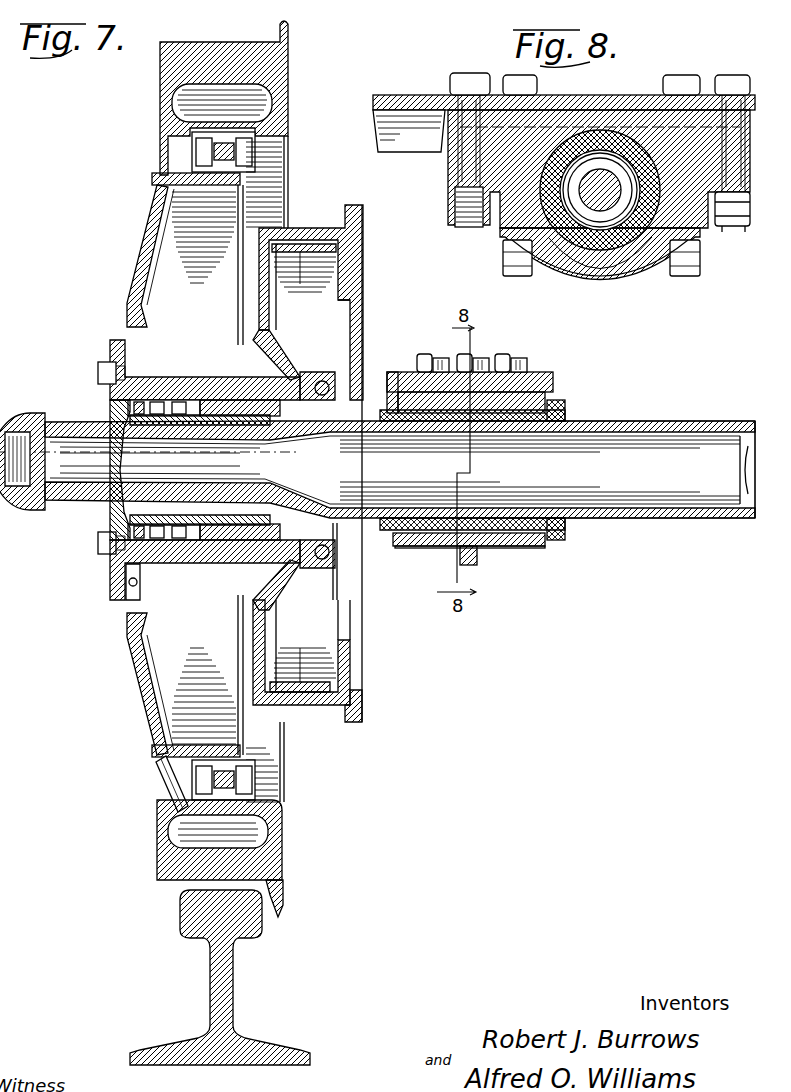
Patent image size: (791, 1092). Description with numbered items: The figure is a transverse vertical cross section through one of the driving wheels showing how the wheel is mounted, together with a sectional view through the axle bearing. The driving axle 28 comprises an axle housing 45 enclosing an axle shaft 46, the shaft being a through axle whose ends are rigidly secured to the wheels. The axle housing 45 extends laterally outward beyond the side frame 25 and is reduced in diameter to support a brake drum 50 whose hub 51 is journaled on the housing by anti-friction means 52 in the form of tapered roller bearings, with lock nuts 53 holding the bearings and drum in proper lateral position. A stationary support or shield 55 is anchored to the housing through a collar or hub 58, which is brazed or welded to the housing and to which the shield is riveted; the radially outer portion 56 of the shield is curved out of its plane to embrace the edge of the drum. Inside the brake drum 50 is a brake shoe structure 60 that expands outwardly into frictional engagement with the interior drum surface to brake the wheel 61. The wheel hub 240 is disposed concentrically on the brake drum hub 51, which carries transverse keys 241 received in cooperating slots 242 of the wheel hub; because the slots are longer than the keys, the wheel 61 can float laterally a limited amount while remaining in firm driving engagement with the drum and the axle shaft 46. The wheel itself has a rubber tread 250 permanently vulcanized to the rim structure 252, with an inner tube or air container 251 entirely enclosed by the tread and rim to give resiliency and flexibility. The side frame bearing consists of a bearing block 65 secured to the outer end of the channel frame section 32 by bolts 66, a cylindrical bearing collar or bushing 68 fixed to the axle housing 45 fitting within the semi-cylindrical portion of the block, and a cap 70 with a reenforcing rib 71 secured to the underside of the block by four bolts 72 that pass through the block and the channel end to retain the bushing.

In FIG. 7, the side frame 25 is at (548, 372).
In FIG. 7, the driving axle 28 is at (700, 518).
In FIG. 7, the frame section 32 is at (390, 370).
In FIG. 8, the frame section 32 is at (384, 86).
In FIG. 7, the axle housing 45 is at (632, 421).
In FIG. 8, the axle housing 45 is at (612, 210).
In FIG. 7, the axle shaft 46 is at (655, 452).
In FIG. 8, the axle shaft 46 is at (628, 222).
In FIG. 7, the brake drum 50 is at (320, 706).
In FIG. 7, the hub 51 is at (218, 392).
In FIG. 7, the anti-friction means 52 is at (176, 402).
In FIG. 7, the lock nuts 53 is at (128, 498).
In FIG. 7, the stationary support or shield 55 is at (352, 664).
In FIG. 7, the curved outer portion 56 is at (352, 722).
In FIG. 7, the collar or hub 58 is at (338, 540).
In FIG. 7, the brake shoe structure 60 is at (345, 286).
In FIG. 7, the wheel 61 is at (150, 730).
In FIG. 7, the bearing block 65 is at (553, 392).
In FIG. 8, the bearing block 65 is at (650, 112).
In FIG. 7, the bolts 66 is at (472, 356).
In FIG. 8, the bolts 66 is at (470, 226).
In FIG. 7, the bearing collar or bushing 68 is at (552, 540).
In FIG. 8, the bearing collar or bushing 68 is at (618, 240).
In FIG. 7, the cap 70 is at (522, 546).
In FIG. 8, the cap 70 is at (606, 250).
In FIG. 7, the reenforcing rib 71 is at (477, 562).
In FIG. 8, the reenforcing rib 71 is at (570, 262).
In FIG. 7, the bolts 72 is at (420, 356).
In FIG. 8, the bolts 72 is at (515, 277).
In FIG. 7, the hub of the driving wheel 240 is at (176, 555).
In FIG. 7, the transverse keys 241 is at (112, 566).
In FIG. 7, the slots 242 is at (110, 538).
In FIG. 7, the tread 250 is at (170, 883).
In FIG. 7, the inner tube or air container 251 is at (170, 832).
In FIG. 7, the rim structure 252 is at (284, 880).